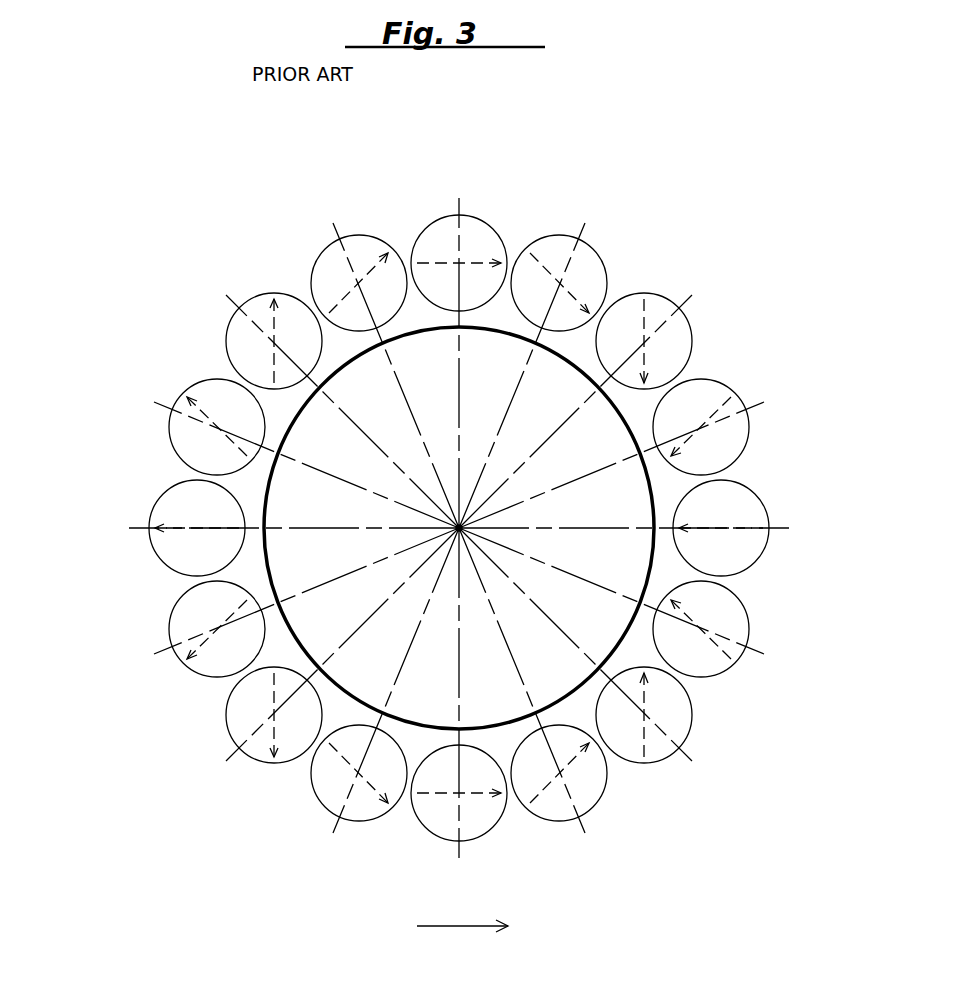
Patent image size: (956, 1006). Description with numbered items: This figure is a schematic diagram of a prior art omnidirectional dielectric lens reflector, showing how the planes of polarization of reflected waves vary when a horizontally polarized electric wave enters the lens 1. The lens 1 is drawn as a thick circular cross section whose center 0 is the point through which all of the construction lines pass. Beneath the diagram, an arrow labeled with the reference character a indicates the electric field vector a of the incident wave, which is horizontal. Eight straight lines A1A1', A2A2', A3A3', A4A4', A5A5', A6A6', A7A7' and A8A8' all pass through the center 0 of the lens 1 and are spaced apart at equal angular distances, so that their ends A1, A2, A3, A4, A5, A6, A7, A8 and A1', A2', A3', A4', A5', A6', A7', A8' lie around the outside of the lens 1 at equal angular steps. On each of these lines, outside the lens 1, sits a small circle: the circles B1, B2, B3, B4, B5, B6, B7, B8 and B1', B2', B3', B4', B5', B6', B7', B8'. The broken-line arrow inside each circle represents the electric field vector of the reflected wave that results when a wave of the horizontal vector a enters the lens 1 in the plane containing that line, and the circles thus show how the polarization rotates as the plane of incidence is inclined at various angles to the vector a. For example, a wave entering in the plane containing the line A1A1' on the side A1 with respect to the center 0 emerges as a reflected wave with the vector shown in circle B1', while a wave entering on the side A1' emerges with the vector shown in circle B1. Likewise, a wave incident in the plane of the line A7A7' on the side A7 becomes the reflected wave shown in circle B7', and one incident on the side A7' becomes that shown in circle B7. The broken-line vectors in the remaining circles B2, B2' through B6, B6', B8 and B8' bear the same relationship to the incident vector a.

The lens 1 is at (653, 480).
The center of the lens 0 is at (451, 548).
The electric field vector of the incident wave a is at (473, 928).
The straight line A1A1' A1 is at (277, 532).
The straight line A2A2' A2 is at (289, 456).
The straight line A3A3' A3 is at (336, 396).
The straight line A4A4' A4 is at (386, 361).
The straight line A5A5' A5 is at (461, 349).
The straight line A6A6' A6 is at (532, 362).
The straight line A7A7' A7 is at (587, 401).
The straight line A8A8' A8 is at (626, 459).
The straight line A1A1' A1' is at (634, 527).
The straight line A2A2' A2' is at (626, 600).
The straight line A3A3' A3' is at (592, 657).
The straight line A4A4' A4' is at (535, 698).
The straight line A5A5' A5' is at (461, 718).
The straight line A6A6' A6' is at (389, 704).
The straight line A7A7' A7' is at (328, 664).
The straight line A8A8' A8' is at (294, 609).
The circle B1 is at (183, 524).
The circle B2 is at (217, 414).
The circle B3 is at (274, 324).
The circle B4 is at (359, 264).
The circle B5 is at (466, 254).
The circle B6 is at (576, 283).
The circle B7 is at (661, 341).
The circle B8 is at (720, 427).
The circle B1' is at (732, 536).
The circle B2' is at (702, 645).
The circle B3' is at (644, 738).
The circle B4' is at (559, 793).
The circle B5' is at (450, 810).
The circle B6' is at (341, 775).
The circle B7' is at (250, 715).
The circle B8' is at (198, 629).